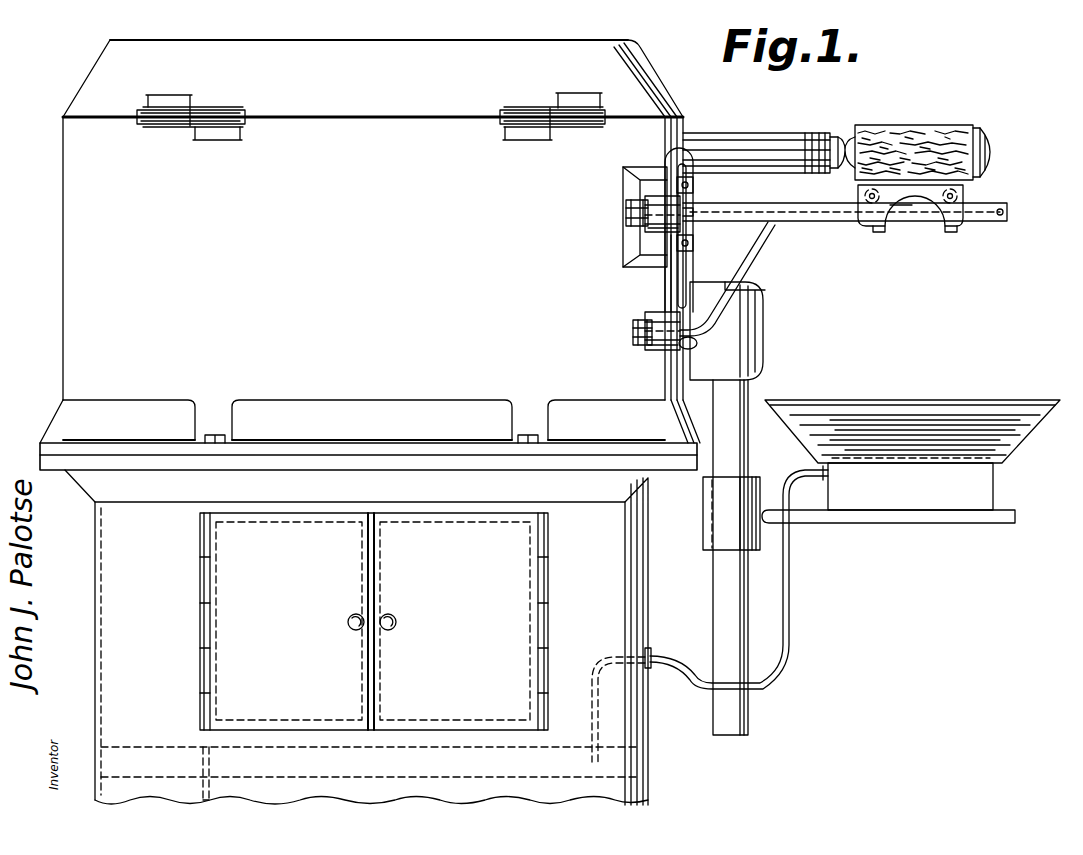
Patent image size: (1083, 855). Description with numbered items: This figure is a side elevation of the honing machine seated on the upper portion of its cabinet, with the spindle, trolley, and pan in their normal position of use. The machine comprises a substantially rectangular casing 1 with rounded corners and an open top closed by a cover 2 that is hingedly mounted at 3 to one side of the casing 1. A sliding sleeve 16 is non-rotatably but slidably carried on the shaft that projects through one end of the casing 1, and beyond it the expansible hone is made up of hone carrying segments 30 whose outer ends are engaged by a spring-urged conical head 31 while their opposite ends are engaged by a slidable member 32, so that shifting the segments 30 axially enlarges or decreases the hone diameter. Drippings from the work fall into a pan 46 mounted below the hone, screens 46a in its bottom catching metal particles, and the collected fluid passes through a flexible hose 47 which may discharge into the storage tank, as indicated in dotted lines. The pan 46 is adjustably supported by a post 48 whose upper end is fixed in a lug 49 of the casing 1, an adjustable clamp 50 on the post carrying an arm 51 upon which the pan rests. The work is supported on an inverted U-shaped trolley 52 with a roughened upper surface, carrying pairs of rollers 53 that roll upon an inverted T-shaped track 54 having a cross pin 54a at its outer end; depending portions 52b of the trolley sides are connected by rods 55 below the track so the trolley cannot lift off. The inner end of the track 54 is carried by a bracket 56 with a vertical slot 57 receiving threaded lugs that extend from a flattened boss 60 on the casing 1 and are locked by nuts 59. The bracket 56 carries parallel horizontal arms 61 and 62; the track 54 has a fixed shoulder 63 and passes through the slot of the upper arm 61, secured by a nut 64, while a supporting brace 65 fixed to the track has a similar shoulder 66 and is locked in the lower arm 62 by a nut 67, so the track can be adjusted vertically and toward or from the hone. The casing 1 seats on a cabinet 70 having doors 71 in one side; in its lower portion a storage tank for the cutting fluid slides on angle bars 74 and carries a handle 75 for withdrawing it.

The casing 1 is at (78, 220).
The cover 2 is at (128, 56).
The hinge mounting 3 is at (180, 123).
The sliding sleeve 16 is at (742, 152).
The hone carrying segments 30 is at (916, 123).
The conical head 31 is at (982, 142).
The slidable member 32 is at (842, 140).
The pan 46 is at (897, 413).
The screens 46a is at (897, 465).
The flexible conduit or hose 47 is at (790, 571).
The post 48 is at (724, 587).
The lug 49 is at (762, 310).
The adjustable clamp 50 is at (722, 514).
The arm 51 is at (926, 523).
The trolley 52 is at (915, 222).
The depending portions 52b is at (880, 232).
The rollers 53 is at (960, 197).
The track 54 is at (828, 213).
The cross pin 54a is at (1008, 212).
The rods 55 is at (950, 233).
The bracket 56 is at (670, 279).
The slot 57 is at (679, 292).
The nuts 59 is at (695, 185).
The flattened boss 60 is at (650, 176).
The upper arm 61 is at (656, 198).
The lower arm 62 is at (657, 350).
The shoulder 63 is at (700, 210).
The nut 64 is at (636, 214).
The supporting brace 65 is at (758, 252).
The shoulder 66 is at (698, 343).
The nut 67 is at (632, 332).
The cabinet 70 is at (118, 552).
The doors 71 is at (385, 530).
The angle bars 74 is at (168, 746).
The handle 75 is at (218, 798).